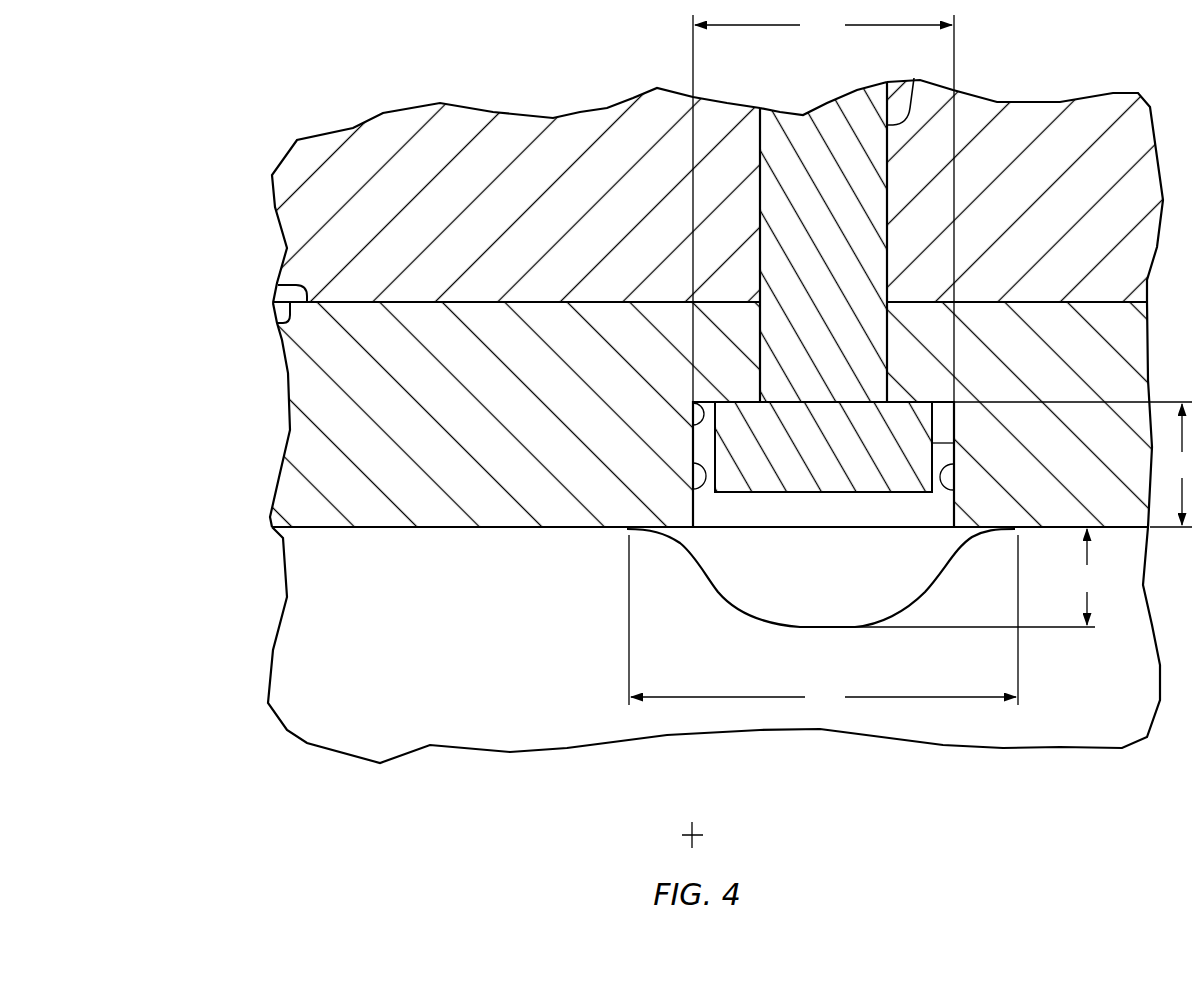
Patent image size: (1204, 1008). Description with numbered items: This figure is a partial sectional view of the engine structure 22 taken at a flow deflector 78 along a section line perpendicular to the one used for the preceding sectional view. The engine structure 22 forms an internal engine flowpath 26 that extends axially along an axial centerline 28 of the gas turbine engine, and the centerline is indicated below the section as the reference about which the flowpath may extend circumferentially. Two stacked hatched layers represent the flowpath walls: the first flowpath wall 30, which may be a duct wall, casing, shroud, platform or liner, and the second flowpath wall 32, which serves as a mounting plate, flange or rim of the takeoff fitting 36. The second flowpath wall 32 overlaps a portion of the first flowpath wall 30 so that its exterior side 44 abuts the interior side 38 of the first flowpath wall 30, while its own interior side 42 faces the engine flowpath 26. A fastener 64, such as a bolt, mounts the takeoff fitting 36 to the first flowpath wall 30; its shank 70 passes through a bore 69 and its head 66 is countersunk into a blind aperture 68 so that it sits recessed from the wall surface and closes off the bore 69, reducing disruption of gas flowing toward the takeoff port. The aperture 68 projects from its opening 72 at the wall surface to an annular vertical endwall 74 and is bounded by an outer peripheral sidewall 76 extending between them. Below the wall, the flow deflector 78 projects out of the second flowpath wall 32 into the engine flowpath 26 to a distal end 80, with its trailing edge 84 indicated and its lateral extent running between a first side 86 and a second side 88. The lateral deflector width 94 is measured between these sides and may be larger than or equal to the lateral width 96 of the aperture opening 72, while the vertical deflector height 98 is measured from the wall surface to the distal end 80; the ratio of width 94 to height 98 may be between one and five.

The engine structure 22 is at (247, 127).
The engine flowpath 26 is at (381, 679).
The axial centerline 28 is at (698, 830).
The first flowpath wall 30 is at (256, 210).
The second flowpath wall 32 is at (645, 414).
The takeoff fitting 36 is at (270, 403).
The interior side 38 is at (277, 322).
The interior side 42 is at (346, 569).
The exterior side 44 is at (300, 288).
The fastener 64 is at (822, 90).
The head 66 is at (957, 440).
The blind aperture 68 is at (810, 518).
The bore 69 is at (887, 338).
The shank 70 is at (910, 86).
The opening 72 is at (857, 530).
The vertical endwall 74 is at (690, 401).
The outer peripheral sidewall 76 is at (692, 481).
The flow deflector 78 is at (724, 636).
The distal end 80 is at (829, 628).
The trailing edge 84 is at (820, 611).
The first side 86 is at (1018, 532).
The second side 88 is at (627, 532).
The lateral deflector width 94 is at (823, 622).
The lateral width 96 is at (823, 208).
The vertical deflector height 98 is at (965, 578).